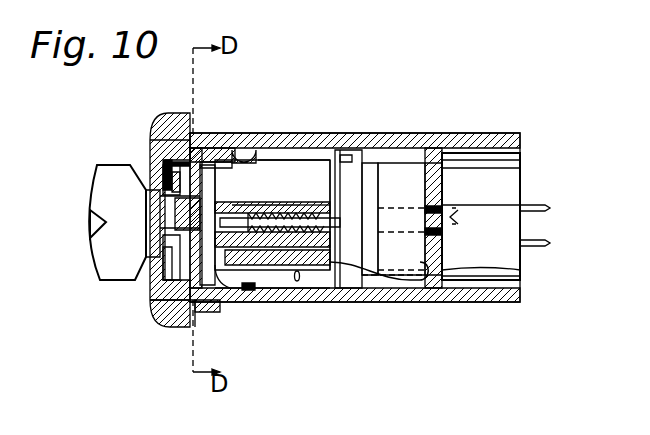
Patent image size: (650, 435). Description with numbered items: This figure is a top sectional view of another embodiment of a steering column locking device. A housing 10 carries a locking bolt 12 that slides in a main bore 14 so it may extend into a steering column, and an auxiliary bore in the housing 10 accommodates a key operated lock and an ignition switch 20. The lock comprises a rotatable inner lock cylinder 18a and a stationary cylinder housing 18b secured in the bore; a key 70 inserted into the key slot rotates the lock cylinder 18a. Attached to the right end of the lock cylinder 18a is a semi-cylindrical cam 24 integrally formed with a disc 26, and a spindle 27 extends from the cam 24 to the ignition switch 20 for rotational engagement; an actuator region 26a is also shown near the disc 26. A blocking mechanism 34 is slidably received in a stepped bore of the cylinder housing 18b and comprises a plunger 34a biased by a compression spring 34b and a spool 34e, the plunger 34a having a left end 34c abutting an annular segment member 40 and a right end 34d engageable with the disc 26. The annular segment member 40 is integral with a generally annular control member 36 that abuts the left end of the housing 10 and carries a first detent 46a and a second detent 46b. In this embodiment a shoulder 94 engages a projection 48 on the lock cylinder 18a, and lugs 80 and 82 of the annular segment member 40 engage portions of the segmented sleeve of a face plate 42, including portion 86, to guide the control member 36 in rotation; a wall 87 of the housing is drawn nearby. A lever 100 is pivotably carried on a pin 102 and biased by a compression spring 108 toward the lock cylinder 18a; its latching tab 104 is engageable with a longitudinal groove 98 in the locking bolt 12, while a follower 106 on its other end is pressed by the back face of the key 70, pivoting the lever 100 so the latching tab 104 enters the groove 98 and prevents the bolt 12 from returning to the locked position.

The housing 10 is at (475, 140).
The locking bolt 12 is at (405, 175).
The main bore 14 is at (500, 270).
The lock cylinder 18a is at (155, 262).
The cylinder housing 18b is at (300, 193).
The ignition switch 20 is at (512, 184).
The cam 24 is at (375, 160).
The disc 26 is at (355, 290).
The switch actuator 26a is at (345, 158).
The spindle 27 is at (431, 178).
The blocking mechanism 34 is at (306, 178).
The plunger 34a is at (268, 160).
The compression spring 34b is at (325, 203).
The left end of plunger 34c is at (227, 148).
The right end of plunger 34d is at (348, 160).
The spool 34e is at (286, 203).
The control member 36 is at (170, 327).
The annular segment member 40 is at (100, 172).
The face plate 42 is at (158, 308).
The first detent 46a is at (160, 234).
The second detent 46b is at (160, 140).
The projection 48 is at (165, 163).
The key 70 is at (88, 232).
The lug 80 is at (203, 135).
The lug 82 is at (203, 314).
The portion of segmented annular sleeve 86 is at (242, 150).
The wall 87 is at (218, 292).
The shoulder 94 is at (150, 205).
The longitudinal groove 98 is at (414, 290).
The lever 100 is at (275, 285).
The pin 102 is at (298, 282).
The latching tab 104 is at (390, 290).
The follower 106 is at (222, 292).
The compression spring 108 is at (248, 291).